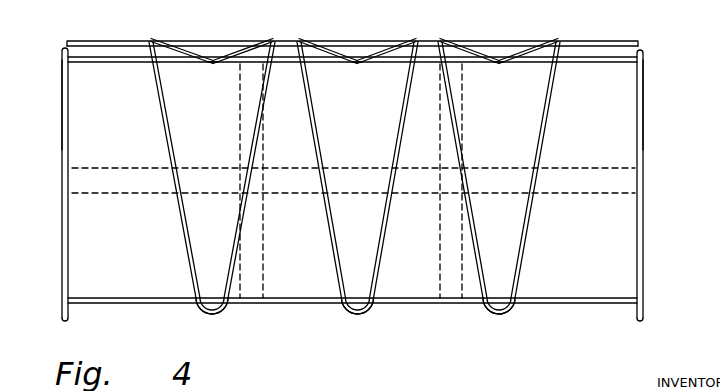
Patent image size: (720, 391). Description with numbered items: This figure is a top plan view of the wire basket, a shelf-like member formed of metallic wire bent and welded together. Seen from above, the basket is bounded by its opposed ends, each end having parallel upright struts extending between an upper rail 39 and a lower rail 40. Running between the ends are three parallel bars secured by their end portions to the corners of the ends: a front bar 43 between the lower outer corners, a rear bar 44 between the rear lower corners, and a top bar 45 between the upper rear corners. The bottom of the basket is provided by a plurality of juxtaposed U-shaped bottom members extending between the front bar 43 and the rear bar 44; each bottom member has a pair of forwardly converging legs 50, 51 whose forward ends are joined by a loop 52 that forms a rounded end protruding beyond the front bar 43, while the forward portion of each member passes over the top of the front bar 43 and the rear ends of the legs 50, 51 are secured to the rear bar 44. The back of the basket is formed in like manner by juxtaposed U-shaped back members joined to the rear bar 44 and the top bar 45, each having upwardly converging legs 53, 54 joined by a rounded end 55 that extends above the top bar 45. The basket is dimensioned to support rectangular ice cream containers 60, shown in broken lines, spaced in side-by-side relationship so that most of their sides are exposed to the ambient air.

The upper rail 39 is at (62, 133).
The lower rail 40 is at (70, 88).
The front bar 43 is at (268, 298).
The rear bar 44 is at (128, 42).
The top bar 45 is at (120, 63).
The leg 50 is at (245, 168).
The leg 51 is at (167, 152).
The loop 52 is at (214, 314).
The leg 53 is at (248, 50).
The leg 54 is at (176, 47).
The rounded end 55 is at (214, 63).
The container 60 is at (133, 278).